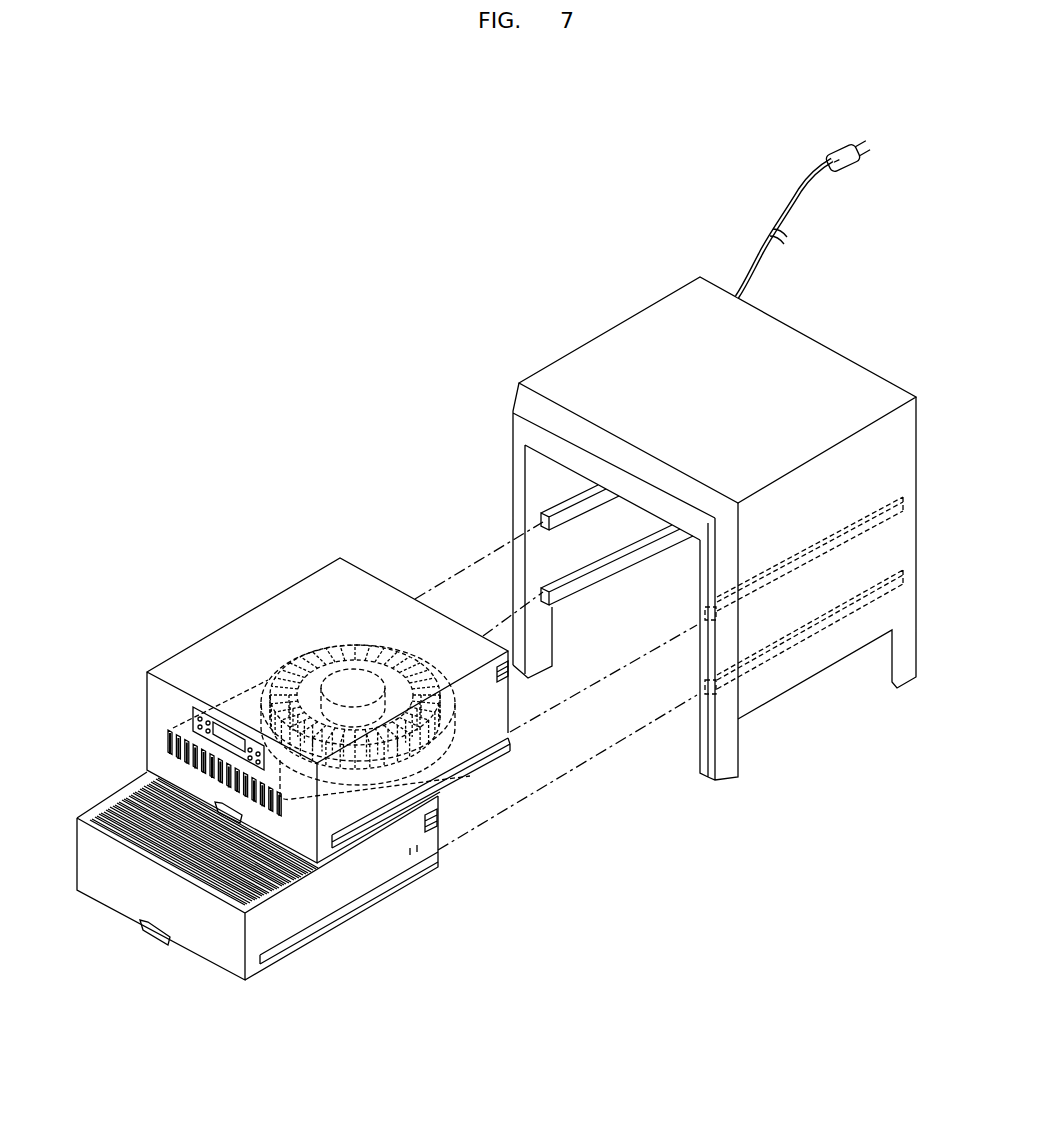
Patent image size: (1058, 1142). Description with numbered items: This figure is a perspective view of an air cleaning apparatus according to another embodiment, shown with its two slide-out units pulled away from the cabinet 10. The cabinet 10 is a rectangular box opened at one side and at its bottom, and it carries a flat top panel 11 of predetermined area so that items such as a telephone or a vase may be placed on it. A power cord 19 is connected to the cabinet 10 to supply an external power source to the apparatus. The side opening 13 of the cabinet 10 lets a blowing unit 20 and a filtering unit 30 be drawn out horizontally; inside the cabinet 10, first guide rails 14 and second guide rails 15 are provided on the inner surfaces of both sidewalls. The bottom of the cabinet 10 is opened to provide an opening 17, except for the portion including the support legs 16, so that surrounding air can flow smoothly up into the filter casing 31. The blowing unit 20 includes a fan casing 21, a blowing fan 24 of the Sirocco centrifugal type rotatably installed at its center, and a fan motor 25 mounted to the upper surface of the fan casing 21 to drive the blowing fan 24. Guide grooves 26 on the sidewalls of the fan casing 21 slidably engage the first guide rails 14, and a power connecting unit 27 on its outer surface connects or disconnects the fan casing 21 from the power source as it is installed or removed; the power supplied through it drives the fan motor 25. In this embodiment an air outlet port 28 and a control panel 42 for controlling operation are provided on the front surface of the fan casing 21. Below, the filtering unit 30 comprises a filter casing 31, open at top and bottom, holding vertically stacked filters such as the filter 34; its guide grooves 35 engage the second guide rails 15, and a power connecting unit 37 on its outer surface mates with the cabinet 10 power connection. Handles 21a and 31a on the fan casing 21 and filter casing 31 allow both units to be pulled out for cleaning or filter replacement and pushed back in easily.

The cabinet 10 is at (704, 512).
The top panel 11 is at (770, 335).
The opening 13 is at (543, 484).
The first guide rails 14 is at (541, 518).
The second guide rails 15 is at (541, 590).
The support legs 16 is at (748, 752).
The opening 17 is at (852, 657).
The power cord 19 is at (812, 182).
The blowing unit 20 is at (339, 754).
The fan casing 21 is at (245, 622).
The handle 21a is at (227, 820).
The blowing fan 24 is at (347, 650).
The fan motor 25 is at (360, 684).
The guide grooves 26 is at (512, 748).
The power connecting unit 27 is at (509, 676).
The air outlet port 28 is at (188, 718).
The filtering unit 30 is at (284, 882).
The filter casing 31 is at (92, 812).
The handle 31a is at (150, 930).
The filter 34 is at (138, 810).
The guide grooves 35 is at (362, 896).
The power connecting unit 37 is at (438, 828).
The control panel 42 is at (168, 735).